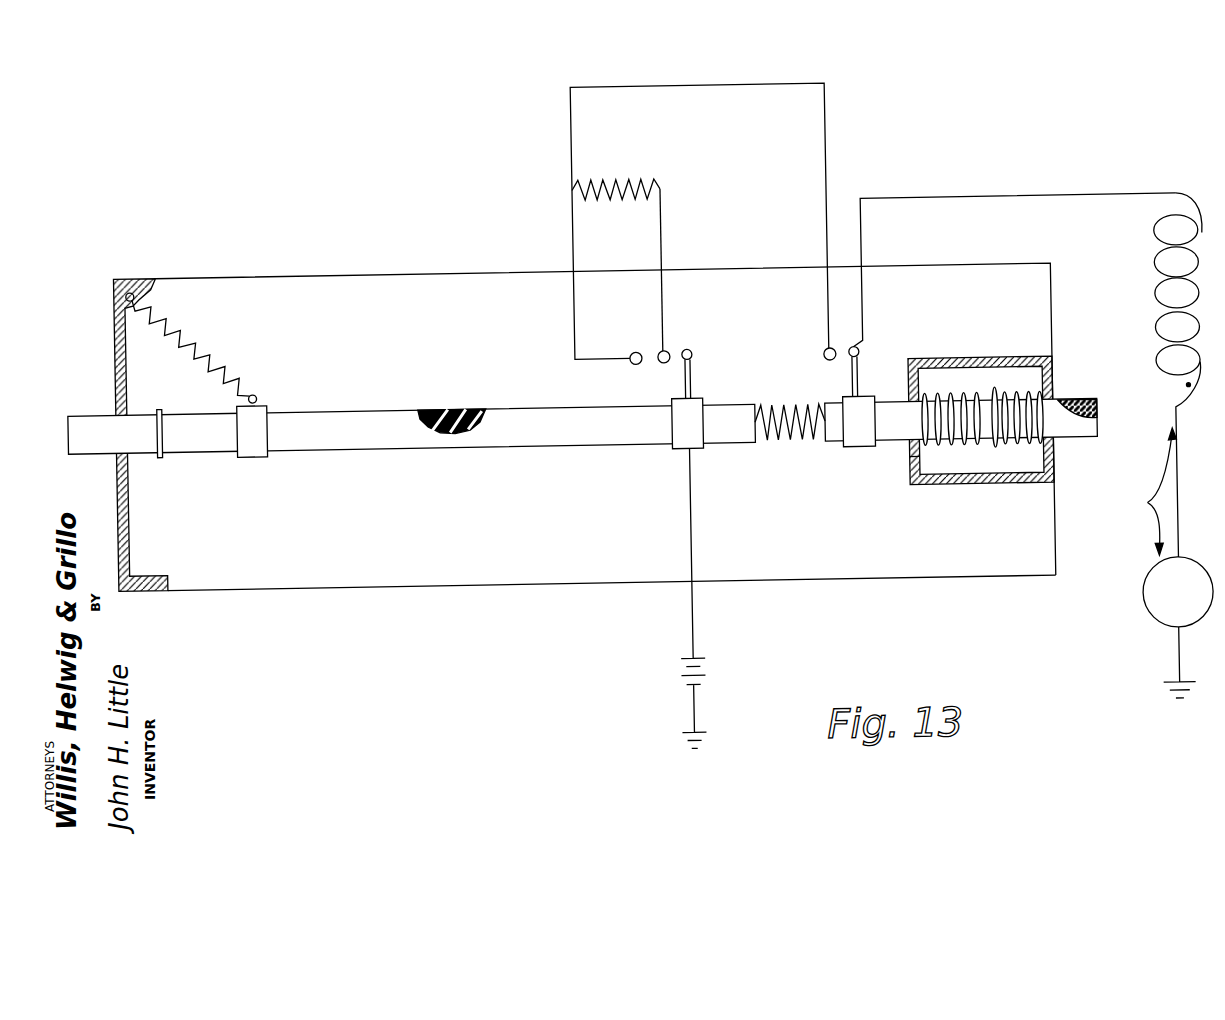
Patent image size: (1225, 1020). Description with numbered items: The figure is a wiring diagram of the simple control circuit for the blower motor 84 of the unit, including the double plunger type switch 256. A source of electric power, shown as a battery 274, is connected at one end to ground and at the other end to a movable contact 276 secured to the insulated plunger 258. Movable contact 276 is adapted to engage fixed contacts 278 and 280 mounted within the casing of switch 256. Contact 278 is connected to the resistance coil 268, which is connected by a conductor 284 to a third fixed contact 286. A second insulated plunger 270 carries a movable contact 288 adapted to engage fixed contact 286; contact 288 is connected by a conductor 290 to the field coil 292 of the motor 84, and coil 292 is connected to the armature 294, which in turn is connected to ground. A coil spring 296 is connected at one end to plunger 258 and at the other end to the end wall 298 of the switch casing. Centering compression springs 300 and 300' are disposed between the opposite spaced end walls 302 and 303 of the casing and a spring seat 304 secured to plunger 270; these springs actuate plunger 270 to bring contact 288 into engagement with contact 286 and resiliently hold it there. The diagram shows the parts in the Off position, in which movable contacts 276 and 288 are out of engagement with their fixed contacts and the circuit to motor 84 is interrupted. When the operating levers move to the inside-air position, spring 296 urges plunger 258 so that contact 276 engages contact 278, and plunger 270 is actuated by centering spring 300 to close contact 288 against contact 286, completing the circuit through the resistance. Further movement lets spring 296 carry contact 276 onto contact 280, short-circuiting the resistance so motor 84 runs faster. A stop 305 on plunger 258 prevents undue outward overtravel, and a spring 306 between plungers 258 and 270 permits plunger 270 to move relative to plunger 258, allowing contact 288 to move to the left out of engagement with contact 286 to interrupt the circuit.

The blower motor 84 is at (1146, 492).
The double plunger type switch 256 is at (915, 584).
The plunger 258 is at (92, 445).
The resistance coil 268 is at (614, 180).
The insulated plunger 270 is at (1097, 445).
The battery 274 is at (706, 665).
The movable contact 276 is at (693, 356).
The fixed contact 278 is at (666, 352).
The fixed contact 280 is at (633, 354).
The conductor 284 is at (684, 87).
The third fixed contact 286 is at (827, 353).
The movable contact 288 is at (851, 358).
The conductor 290 is at (1054, 203).
The field coil 292 is at (1158, 297).
The armature 294 is at (1150, 626).
The coil spring 296 is at (212, 360).
The end wall 298 is at (252, 583).
The centering compression spring 300 is at (1023, 449).
The centering compression spring 300' is at (952, 452).
The end wall 302 is at (1054, 378).
The end wall 303 is at (909, 462).
The spring seat 304 is at (995, 394).
The stop 305 is at (160, 450).
The spring 306 is at (785, 445).